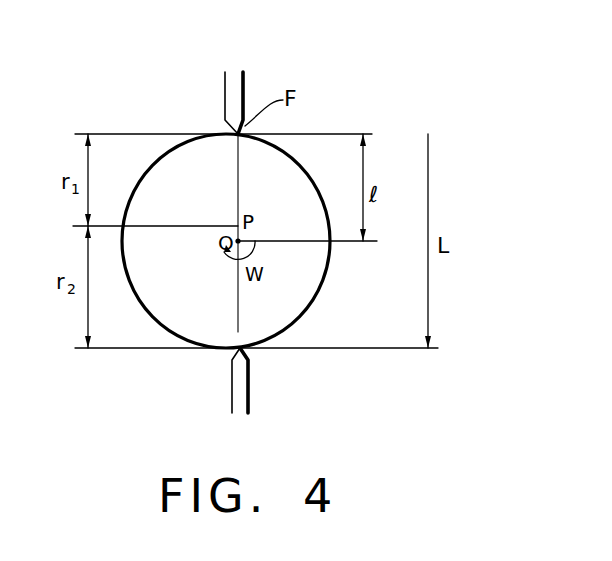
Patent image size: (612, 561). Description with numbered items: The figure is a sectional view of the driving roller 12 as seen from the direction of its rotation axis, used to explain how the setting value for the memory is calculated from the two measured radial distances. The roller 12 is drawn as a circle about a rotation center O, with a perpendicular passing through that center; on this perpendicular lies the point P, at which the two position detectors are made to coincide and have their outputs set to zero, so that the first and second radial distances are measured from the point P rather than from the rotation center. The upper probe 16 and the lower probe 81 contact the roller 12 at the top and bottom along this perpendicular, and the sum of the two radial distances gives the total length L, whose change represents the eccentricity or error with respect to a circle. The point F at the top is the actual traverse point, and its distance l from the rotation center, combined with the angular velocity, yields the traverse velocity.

The roller 12 is at (170, 150).
The upper probe 16 is at (243, 88).
The lower support probe 81 is at (243, 387).